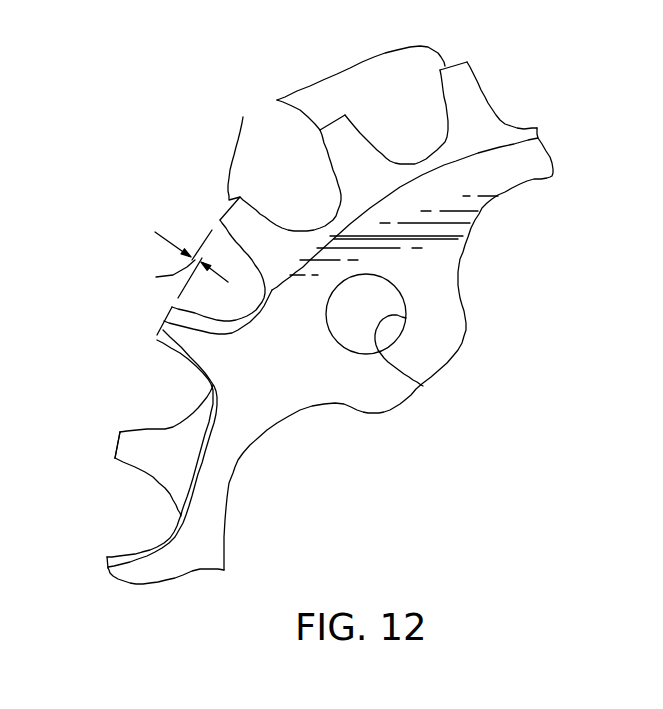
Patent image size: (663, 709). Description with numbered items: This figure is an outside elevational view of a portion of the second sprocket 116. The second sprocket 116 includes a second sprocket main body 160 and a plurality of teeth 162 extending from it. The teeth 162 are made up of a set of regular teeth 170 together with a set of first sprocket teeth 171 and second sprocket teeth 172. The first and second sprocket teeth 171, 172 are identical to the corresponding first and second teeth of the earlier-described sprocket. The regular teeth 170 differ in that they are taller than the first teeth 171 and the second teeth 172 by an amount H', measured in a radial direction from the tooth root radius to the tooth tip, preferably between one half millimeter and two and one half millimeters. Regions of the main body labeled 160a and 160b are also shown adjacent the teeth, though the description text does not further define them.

The second sprocket 116 is at (291, 315).
The regular teeth 170 is at (278, 100).
The first sprocket teeth 171 is at (101, 441).
The second sprocket teeth 172 is at (126, 450).
The teeth 162 is at (96, 415).
The second sprocket main body 160 is at (330, 356).
The flat face of blade carrier 160a is at (409, 246).
The hook of blade carrier 160b is at (431, 354).